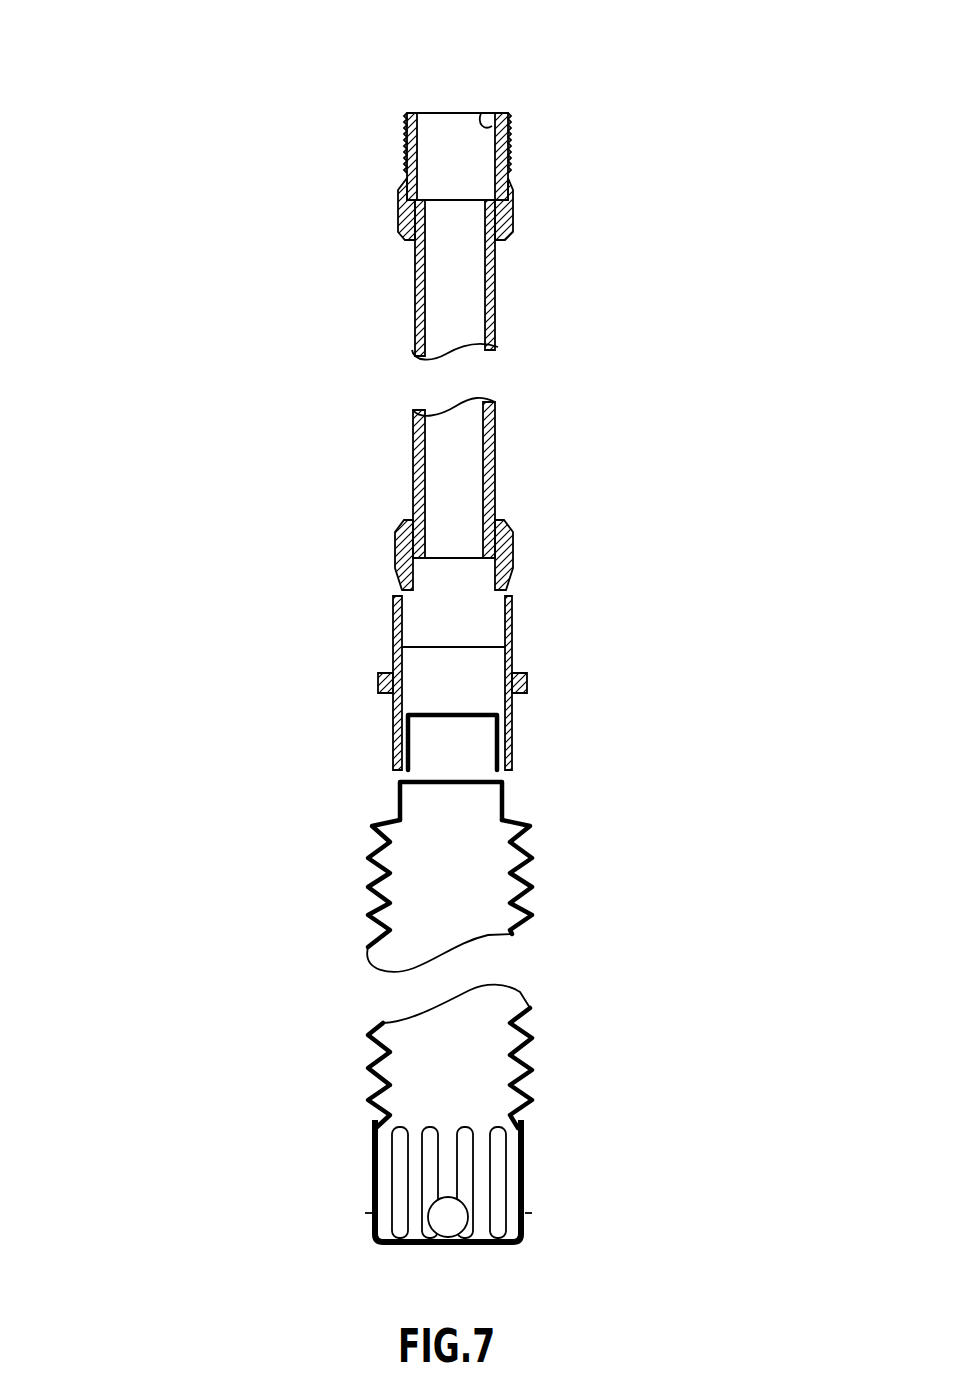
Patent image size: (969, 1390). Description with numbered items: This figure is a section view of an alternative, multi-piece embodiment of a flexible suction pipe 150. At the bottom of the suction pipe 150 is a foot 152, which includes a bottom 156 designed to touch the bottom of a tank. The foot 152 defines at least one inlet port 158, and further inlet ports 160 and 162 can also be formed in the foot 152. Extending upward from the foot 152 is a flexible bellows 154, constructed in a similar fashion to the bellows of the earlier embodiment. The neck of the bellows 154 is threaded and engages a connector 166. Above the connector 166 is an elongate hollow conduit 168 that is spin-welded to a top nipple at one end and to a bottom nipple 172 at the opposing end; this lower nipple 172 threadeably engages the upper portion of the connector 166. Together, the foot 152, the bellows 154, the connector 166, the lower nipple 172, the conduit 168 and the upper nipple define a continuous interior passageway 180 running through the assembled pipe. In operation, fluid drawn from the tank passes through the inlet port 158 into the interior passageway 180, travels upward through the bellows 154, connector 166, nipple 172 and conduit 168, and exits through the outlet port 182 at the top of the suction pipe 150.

The flexible suction pipe 150 is at (157, 672).
The foot 152 is at (527, 1178).
The flexible bellows 154 is at (535, 890).
The bottom 156 is at (480, 1245).
The inlet port 158 is at (447, 1216).
The inlet port 160 is at (365, 1213).
The inlet port 162 is at (532, 1213).
The connector 166 is at (527, 683).
The elongate hollow conduit 168 is at (495, 321).
The bottom nipple 172 is at (513, 547).
The interior passageway 180 is at (455, 264).
The outlet port 182 is at (480, 113).